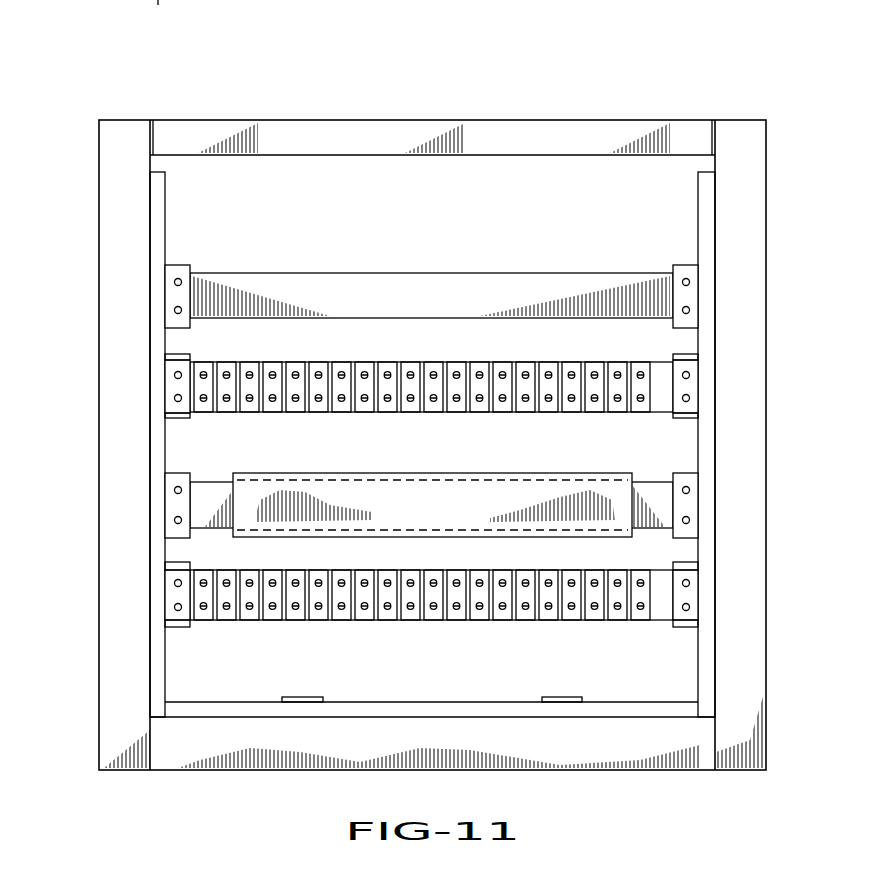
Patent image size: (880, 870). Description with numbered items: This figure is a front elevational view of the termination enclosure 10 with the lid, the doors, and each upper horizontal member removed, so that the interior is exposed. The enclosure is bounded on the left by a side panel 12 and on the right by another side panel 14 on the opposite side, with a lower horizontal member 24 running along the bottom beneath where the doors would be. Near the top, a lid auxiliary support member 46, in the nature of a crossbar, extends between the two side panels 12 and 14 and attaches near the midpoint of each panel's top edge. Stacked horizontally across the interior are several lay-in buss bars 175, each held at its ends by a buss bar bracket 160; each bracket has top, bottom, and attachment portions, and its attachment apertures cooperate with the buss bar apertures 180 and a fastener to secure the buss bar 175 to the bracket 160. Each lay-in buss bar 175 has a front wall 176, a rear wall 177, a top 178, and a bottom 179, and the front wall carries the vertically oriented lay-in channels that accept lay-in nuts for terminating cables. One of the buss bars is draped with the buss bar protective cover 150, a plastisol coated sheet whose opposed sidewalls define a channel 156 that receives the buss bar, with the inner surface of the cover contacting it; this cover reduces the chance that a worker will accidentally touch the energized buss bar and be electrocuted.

The termination enclosure 10 is at (791, 99).
The side panel 12 is at (97, 478).
The side panel 14 is at (767, 595).
The lower horizontal member 24 is at (578, 768).
The lid auxiliary support member 46 is at (305, 140).
The buss bar protective cover 150 is at (303, 473).
The channel 156 is at (158, 15).
The buss bar bracket 160 is at (180, 290).
The lay-in buss bar 175 is at (398, 268).
The front wall 176 is at (355, 605).
The rear wall 177 is at (262, 290).
The top 178 is at (245, 362).
The bottom 179 is at (308, 620).
The buss bar apertures 180 is at (690, 352).